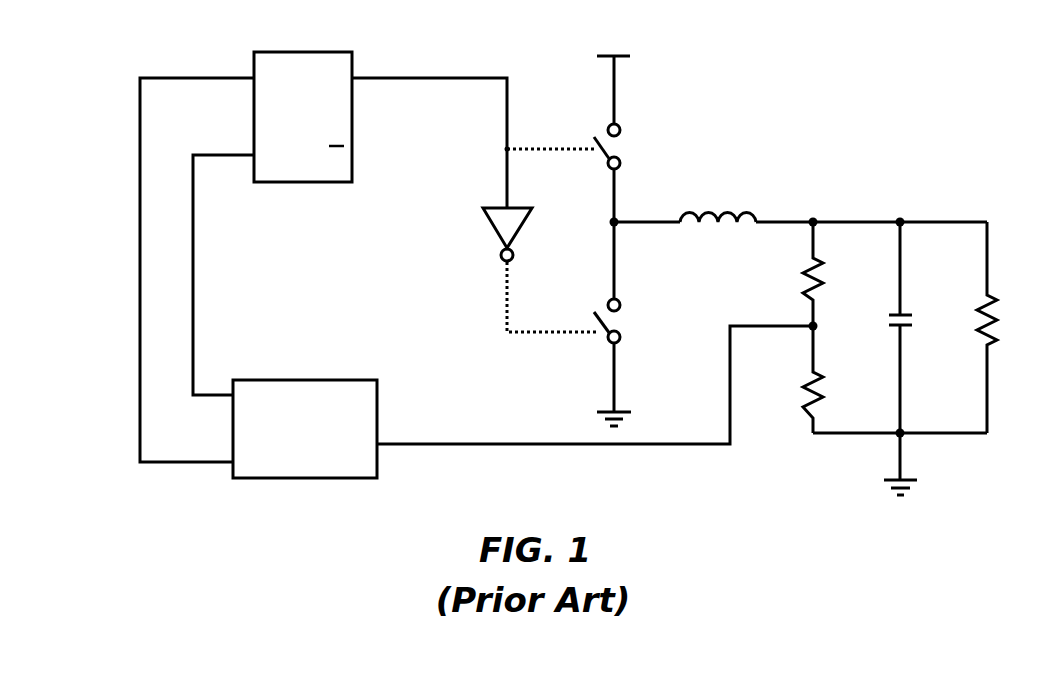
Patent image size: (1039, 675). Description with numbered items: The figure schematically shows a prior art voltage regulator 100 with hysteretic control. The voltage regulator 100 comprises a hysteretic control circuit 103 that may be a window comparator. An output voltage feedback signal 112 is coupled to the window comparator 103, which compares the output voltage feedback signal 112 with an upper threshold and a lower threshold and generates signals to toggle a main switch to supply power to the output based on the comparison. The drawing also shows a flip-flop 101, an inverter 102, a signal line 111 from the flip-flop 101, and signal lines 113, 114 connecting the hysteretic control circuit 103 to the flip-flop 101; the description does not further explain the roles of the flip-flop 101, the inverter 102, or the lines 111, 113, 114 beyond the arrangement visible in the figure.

The voltage regulator 100 is at (845, 95).
The SR flip-flop 101 is at (268, 52).
The inverter 102 is at (492, 238).
The hysteretic control circuit 103 is at (270, 380).
The flip-flop Q output signal line 111 is at (455, 78).
The output voltage feedback signal 112 is at (493, 444).
The reset signal line 113 is at (195, 307).
The set signal line 114 is at (138, 305).